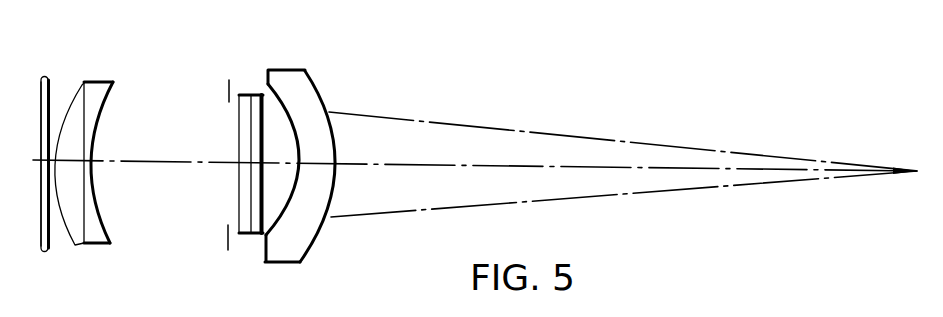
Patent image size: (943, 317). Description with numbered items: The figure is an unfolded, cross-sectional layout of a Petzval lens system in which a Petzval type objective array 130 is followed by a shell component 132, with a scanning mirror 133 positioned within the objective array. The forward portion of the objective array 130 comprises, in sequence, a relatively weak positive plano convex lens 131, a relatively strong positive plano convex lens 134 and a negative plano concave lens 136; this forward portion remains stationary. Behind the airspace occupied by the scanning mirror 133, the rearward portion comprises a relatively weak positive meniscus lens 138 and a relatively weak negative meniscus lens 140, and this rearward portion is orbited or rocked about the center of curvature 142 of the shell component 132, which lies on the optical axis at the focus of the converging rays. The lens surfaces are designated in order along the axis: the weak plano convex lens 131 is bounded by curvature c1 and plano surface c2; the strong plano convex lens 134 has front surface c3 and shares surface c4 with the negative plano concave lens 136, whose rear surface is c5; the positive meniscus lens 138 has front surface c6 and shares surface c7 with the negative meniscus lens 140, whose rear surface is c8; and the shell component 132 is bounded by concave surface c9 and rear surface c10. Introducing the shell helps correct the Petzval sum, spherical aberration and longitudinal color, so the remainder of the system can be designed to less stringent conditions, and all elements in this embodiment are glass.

The Petzval type objective array 130 is at (169, 98).
The positive plano convex lens 131 is at (58, 149).
The shell component 132 is at (305, 165).
The scanning mirror 133 is at (148, 190).
The positive plano convex lens 134 is at (95, 141).
The negative plano concave lens 136 is at (122, 135).
The positive meniscus lens 138 is at (237, 128).
The negative meniscus lens 140 is at (302, 179).
The center of curvature 142 is at (178, 160).
The first surface curvature c1 is at (40, 76).
The second surface curvature c2 is at (50, 98).
The third surface curvature c3 is at (80, 80).
The fourth surface curvature c4 is at (95, 78).
The fifth surface curvature c5 is at (98, 128).
The sixth surface curvature c6 is at (233, 138).
The seventh surface curvature c7 is at (251, 97).
The eighth surface curvature c8 is at (262, 152).
The ninth surface curvature c9 is at (293, 176).
The tenth surface curvature c10 is at (333, 189).